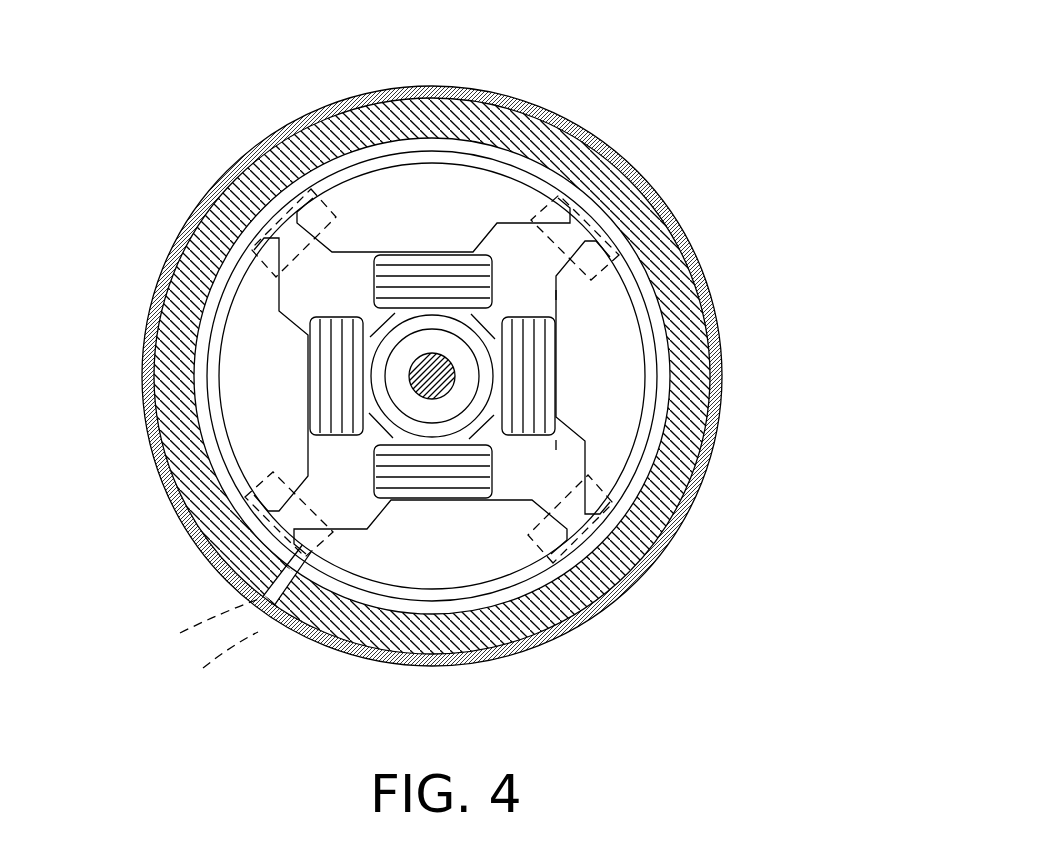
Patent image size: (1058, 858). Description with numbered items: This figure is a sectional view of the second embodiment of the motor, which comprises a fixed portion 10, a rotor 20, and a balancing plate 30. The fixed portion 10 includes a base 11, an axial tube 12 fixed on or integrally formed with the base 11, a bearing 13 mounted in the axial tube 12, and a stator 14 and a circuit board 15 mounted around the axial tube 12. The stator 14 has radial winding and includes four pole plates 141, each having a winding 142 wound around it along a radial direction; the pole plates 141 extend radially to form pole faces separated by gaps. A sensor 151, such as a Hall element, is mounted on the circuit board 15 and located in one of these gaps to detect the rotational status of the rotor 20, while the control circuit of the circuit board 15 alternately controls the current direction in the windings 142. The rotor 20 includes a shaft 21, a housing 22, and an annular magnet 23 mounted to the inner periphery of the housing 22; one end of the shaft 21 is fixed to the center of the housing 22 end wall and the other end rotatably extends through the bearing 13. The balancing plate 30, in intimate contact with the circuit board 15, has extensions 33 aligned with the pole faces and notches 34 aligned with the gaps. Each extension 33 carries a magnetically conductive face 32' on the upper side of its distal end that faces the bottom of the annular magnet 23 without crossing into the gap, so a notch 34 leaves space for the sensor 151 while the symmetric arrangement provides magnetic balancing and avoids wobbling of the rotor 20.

The fixed portion 10 is at (900, 442).
The base 11 is at (643, 583).
The circuit board 15 is at (523, 408).
The axial tube 12 is at (480, 415).
The bearing 13 is at (473, 387).
The stator 14 is at (845, 437).
The pole plate 141 is at (603, 345).
The winding 142 is at (542, 355).
The sensor 151 is at (280, 497).
The rotor 20 is at (155, 82).
The shaft 21 is at (418, 372).
The housing 22 is at (240, 192).
The annular magnet 23 is at (247, 157).
The balancing plate 30 is at (158, 650).
The magnetically conductive face 32' is at (210, 661).
The extension 33 is at (322, 582).
The notch 34 is at (201, 624).